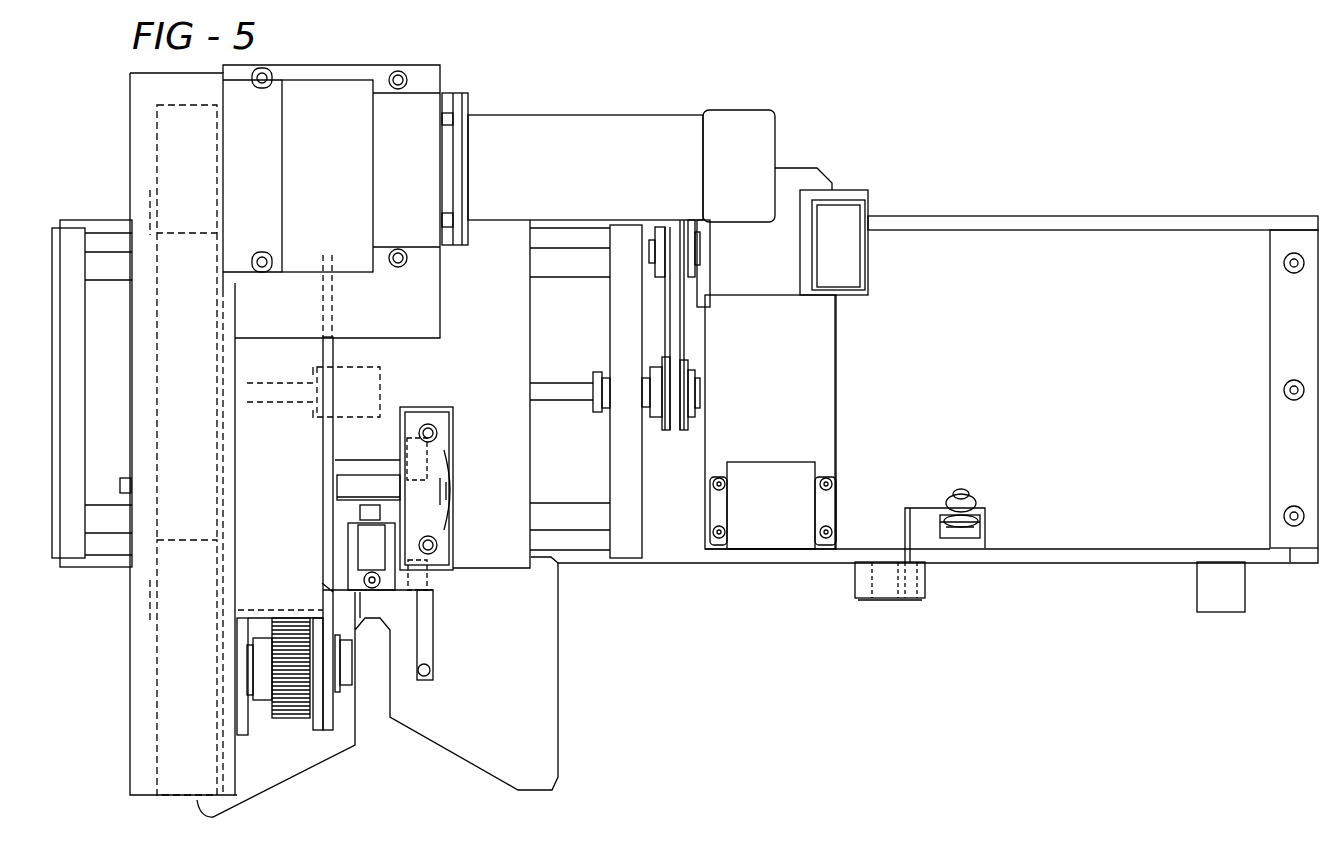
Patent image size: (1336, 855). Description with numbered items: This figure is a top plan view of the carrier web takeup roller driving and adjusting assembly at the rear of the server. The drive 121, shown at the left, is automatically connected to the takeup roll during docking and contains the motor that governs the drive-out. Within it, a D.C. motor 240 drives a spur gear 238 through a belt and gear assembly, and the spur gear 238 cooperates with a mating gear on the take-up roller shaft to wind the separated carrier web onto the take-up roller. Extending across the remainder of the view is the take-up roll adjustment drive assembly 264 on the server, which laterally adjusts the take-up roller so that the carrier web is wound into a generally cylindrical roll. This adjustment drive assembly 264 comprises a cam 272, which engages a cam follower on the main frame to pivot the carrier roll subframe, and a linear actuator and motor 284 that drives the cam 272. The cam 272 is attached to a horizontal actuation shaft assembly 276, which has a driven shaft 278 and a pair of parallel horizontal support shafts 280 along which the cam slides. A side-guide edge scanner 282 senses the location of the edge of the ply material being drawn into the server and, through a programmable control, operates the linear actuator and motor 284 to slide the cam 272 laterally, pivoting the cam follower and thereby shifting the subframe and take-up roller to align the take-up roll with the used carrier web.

The drive 121 is at (188, 181).
The D.C. motor 240 is at (574, 146).
The driven shaft 278 is at (576, 390).
The horizontal support shafts 280 is at (545, 263).
The linear actuator and motor 284 is at (754, 270).
The horizontal actuation shaft assembly 276 is at (636, 438).
The take-up roll adjustment drive assembly 264 is at (540, 597).
The cam 272 is at (543, 705).
The side-guide edge scanner 282 is at (938, 575).
The spur gear 238 is at (287, 722).